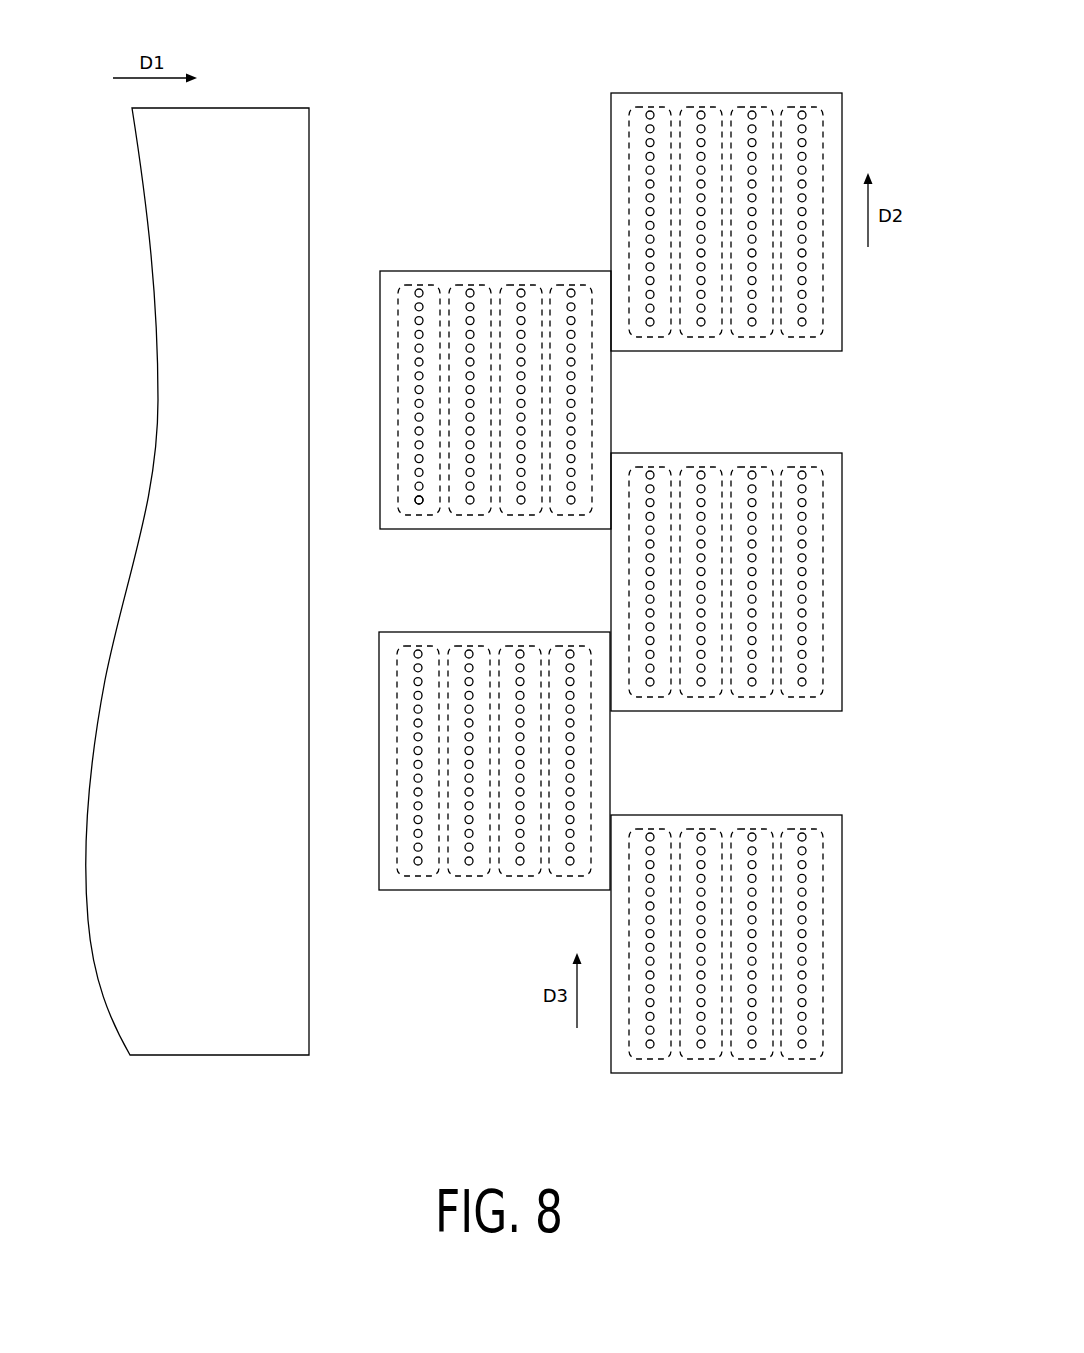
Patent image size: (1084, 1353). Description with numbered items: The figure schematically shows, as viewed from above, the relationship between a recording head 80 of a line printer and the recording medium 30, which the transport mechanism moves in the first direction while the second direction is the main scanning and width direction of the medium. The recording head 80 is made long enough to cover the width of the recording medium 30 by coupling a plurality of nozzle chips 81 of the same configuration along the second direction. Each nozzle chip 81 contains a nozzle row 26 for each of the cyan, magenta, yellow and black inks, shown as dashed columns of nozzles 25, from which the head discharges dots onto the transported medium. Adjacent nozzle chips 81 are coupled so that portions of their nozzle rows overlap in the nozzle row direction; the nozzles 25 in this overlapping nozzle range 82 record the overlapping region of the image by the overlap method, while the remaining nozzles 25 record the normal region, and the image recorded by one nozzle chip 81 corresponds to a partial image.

The recording medium 30 is at (215, 118).
The recording head 80 is at (323, 72).
The nozzle chip 81 is at (468, 529).
The nozzle range 82 is at (846, 292).
The nozzle row 26 is at (576, 285).
The nozzle 25 is at (416, 504).